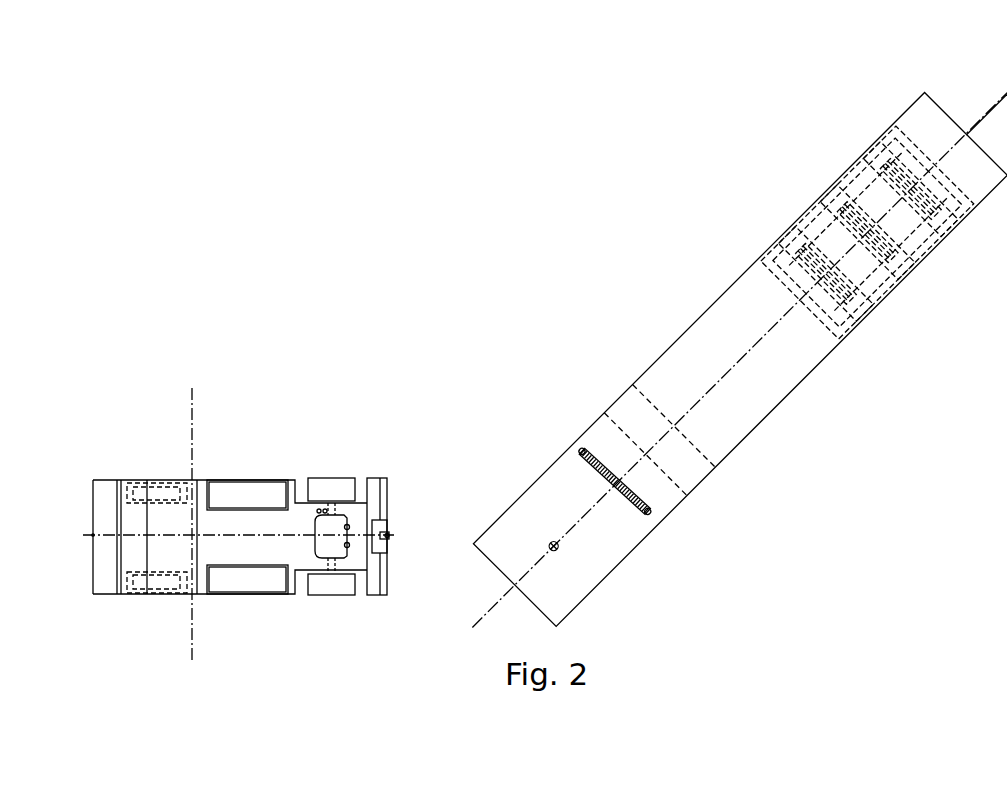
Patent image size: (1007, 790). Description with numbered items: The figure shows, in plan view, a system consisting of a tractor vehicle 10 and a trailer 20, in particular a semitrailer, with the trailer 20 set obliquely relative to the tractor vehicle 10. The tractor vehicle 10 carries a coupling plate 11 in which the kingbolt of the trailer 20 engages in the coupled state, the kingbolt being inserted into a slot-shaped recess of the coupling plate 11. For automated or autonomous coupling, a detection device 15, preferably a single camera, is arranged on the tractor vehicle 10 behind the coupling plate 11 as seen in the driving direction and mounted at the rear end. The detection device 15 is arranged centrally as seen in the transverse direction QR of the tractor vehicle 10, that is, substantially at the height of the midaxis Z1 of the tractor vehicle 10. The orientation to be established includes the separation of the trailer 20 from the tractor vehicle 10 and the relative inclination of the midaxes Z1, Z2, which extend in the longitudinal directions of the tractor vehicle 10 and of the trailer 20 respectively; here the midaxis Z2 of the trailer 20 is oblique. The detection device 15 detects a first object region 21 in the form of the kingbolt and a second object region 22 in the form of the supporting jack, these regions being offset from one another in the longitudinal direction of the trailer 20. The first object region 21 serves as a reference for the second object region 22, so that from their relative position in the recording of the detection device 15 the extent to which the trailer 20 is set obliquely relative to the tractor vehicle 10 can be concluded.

The tractor vehicle 10 is at (288, 452).
The coupling plate 11 is at (348, 518).
The detection device 15 is at (387, 535).
The trailer 20 is at (704, 266).
The first object region 21 is at (551, 542).
The second object region 22 is at (582, 448).
The transverse direction QR is at (192, 410).
The midaxis of the tractor vehicle Z1 is at (93, 535).
The midaxis of the trailer Z2 is at (1006, 94).